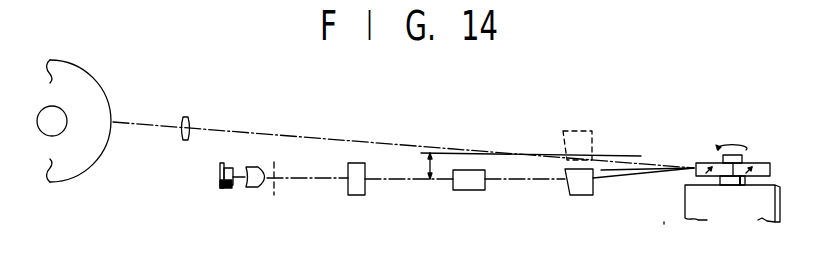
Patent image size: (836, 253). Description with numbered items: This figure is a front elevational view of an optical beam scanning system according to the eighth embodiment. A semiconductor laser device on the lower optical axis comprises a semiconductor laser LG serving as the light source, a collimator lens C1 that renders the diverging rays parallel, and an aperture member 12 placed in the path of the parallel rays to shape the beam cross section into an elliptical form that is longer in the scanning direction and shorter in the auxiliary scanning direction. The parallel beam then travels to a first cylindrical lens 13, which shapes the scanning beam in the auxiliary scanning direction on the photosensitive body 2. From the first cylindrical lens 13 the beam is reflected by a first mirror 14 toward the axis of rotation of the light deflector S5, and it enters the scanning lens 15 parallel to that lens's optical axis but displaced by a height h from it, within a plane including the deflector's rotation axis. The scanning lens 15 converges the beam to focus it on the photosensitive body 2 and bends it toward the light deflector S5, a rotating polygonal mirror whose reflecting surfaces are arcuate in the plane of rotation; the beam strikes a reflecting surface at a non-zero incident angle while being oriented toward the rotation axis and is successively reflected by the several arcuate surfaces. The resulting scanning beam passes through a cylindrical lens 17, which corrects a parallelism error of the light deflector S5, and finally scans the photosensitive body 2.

The photosensitive body 2 is at (107, 98).
The cylindrical lens 17 is at (180, 134).
The semiconductor laser LG is at (219, 184).
The collimator lens C1 is at (257, 187).
The aperture member 12 is at (277, 168).
The first cylindrical lens 13 is at (357, 195).
The height from the optical axis h is at (432, 176).
The first mirror 14 is at (470, 190).
The scanning lens 15 is at (580, 195).
The light deflector S5 is at (778, 146).